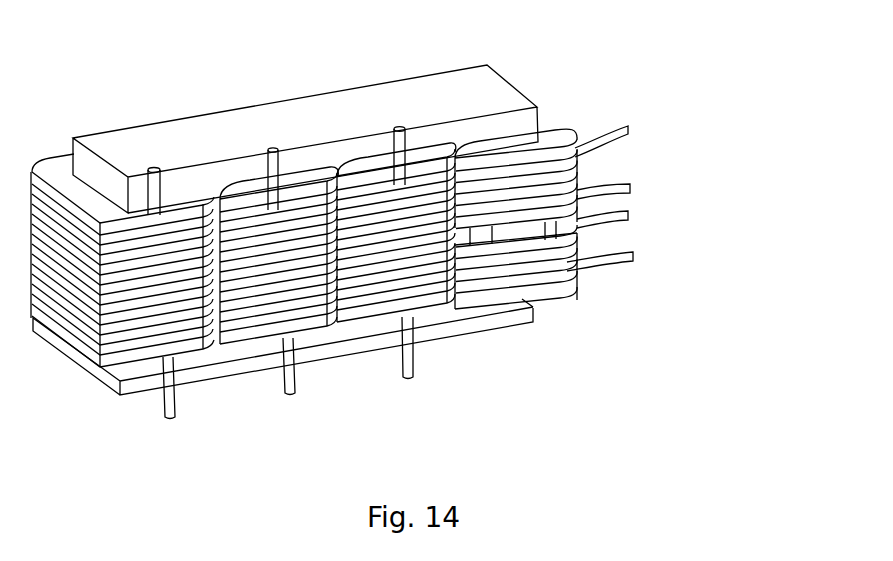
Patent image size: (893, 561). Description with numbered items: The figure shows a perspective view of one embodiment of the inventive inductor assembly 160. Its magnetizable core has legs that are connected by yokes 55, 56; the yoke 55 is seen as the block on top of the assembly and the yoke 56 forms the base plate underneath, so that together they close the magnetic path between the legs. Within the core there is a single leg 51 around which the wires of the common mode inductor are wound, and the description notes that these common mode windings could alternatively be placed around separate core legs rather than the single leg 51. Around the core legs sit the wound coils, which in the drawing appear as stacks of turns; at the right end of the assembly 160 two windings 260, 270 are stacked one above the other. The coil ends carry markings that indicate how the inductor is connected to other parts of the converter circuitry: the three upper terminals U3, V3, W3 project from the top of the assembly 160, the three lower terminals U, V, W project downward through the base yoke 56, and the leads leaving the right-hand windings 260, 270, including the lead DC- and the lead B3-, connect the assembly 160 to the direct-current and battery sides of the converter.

The integrated magnetic assembly 160 is at (412, 259).
The yoke 55 is at (482, 101).
The yoke 56 is at (513, 317).
The core leg 51 is at (527, 233).
The upper inductor coil 260 is at (587, 170).
The lower inductor coil 270 is at (582, 245).
The phase U3 terminal U3 is at (152, 158).
The phase V3 terminal V3 is at (267, 143).
The phase W3 terminal W3 is at (394, 122).
The phase U terminal U is at (177, 408).
The phase V terminal V is at (298, 393).
The phase W terminal W is at (418, 370).
The DC negative lead DC- is at (640, 220).
The battery B3 negative lead B3- is at (643, 265).